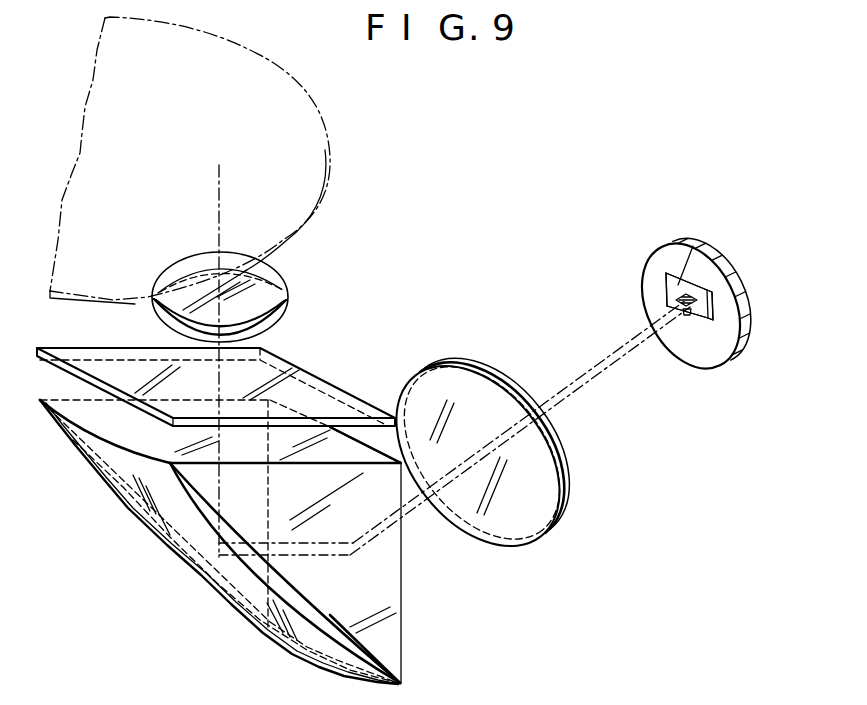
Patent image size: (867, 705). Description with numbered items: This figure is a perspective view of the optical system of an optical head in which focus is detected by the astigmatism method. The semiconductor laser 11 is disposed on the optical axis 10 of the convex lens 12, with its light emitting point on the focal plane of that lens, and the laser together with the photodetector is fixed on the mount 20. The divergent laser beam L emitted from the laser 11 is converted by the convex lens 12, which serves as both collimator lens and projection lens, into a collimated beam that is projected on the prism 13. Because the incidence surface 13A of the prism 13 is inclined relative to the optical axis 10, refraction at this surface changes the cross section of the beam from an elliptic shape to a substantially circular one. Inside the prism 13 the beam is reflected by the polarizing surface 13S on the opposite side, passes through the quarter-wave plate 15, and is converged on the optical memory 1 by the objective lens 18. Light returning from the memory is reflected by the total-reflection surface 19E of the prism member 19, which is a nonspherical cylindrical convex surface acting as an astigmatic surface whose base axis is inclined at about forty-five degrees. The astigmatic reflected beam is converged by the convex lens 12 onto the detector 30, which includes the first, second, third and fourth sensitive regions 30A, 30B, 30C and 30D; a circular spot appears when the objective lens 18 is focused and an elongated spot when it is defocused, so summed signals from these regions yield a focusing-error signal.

The optical memory 1 is at (318, 152).
The optical axis 10 is at (570, 395).
The semiconductor laser 11 is at (685, 322).
The convex lens 12 is at (524, 534).
The prism 13 is at (390, 620).
The incidence surface 13A is at (383, 448).
The polarizing surface 13S is at (382, 660).
The quarter-wave plate 15 is at (298, 374).
The objective lens 18 is at (277, 286).
The prism member 19 is at (192, 545).
The total-reflection surface 19E is at (237, 600).
The mount 20 is at (662, 252).
The detector 30 is at (693, 246).
The first sensitive region 30A is at (672, 280).
The second sensitive region 30B is at (693, 325).
The third sensitive region 30C is at (664, 284).
The fourth sensitive region 30D is at (716, 289).
The laser beam L is at (220, 495).